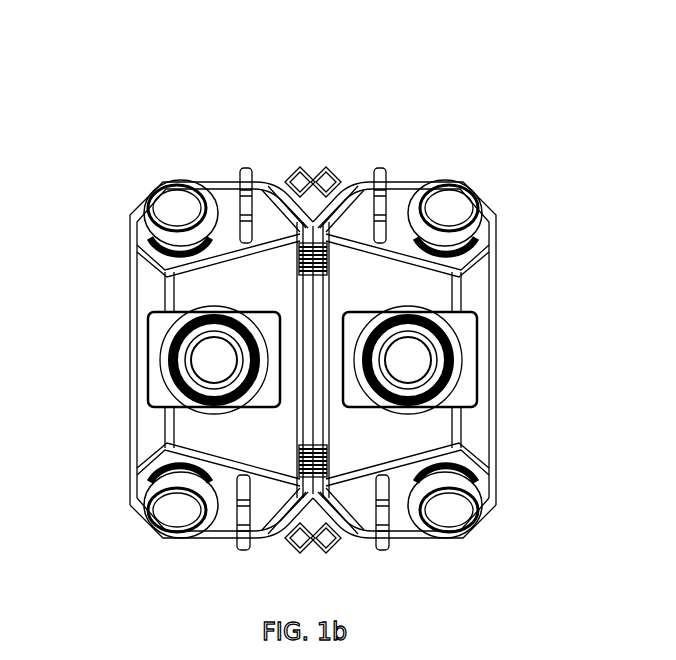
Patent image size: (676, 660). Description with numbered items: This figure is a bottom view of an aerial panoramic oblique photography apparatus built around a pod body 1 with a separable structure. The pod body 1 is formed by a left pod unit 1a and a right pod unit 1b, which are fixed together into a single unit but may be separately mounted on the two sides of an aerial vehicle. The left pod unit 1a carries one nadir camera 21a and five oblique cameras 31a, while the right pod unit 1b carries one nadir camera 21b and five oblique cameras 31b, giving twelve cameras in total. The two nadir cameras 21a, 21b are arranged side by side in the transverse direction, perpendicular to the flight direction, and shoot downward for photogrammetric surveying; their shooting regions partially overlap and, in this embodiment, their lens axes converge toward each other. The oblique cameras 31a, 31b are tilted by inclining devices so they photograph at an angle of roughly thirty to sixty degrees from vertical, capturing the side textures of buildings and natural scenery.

The pod body 1 is at (308, 297).
The left pod unit 1a is at (166, 320).
The right pod unit 1b is at (455, 319).
The nadir camera 21a is at (172, 356).
The nadir camera 21b is at (452, 360).
The oblique cameras 31a is at (174, 208).
The oblique cameras 31b is at (455, 208).